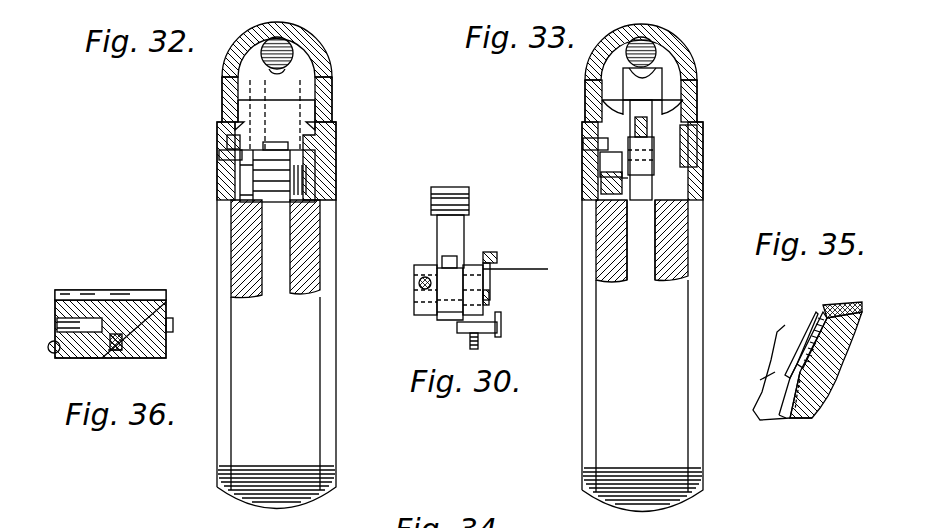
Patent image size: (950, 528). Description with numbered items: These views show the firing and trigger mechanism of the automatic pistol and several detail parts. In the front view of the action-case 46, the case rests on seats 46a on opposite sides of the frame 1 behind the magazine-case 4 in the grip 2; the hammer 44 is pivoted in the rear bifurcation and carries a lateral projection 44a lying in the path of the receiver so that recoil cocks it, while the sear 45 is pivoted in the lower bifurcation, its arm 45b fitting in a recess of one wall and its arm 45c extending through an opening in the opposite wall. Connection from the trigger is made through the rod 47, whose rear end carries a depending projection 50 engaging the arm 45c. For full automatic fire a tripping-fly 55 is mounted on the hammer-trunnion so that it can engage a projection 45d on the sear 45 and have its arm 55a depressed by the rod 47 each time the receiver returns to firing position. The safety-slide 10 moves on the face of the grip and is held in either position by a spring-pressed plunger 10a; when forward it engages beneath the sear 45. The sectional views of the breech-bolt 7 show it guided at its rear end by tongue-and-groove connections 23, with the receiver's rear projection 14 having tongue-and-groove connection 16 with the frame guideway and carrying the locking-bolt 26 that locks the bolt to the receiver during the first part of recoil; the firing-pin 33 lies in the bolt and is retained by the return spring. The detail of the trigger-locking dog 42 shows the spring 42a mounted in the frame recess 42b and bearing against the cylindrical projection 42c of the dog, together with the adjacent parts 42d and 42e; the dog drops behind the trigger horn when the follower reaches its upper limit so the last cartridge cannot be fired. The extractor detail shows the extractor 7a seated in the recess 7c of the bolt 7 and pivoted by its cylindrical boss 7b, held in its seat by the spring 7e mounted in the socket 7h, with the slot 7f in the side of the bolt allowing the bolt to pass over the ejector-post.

In FIG. 35, the frame 1 is at (840, 372).
In FIG. 32, the grip 2 is at (276, 293).
In FIG. 33, the grip 2 is at (642, 296).
In FIG. 35, the magazine-case 4 is at (775, 374).
In FIG. 32, the breech-bolt 7 is at (302, 48).
In FIG. 33, the breech-bolt 7 is at (690, 62).
In FIG. 36, the breech-bolt 7 is at (140, 300).
In FIG. 36, the extractor 7a is at (86, 358).
In FIG. 36, the cylindrical boss 7b is at (120, 356).
In FIG. 36, the recess 7c is at (54, 353).
In FIG. 36, the spring 7e is at (132, 338).
In FIG. 36, the pathway or slot 7f is at (78, 296).
In FIG. 36, the socket 7h is at (123, 341).
In FIG. 30, the safety-slide 10 is at (498, 330).
In FIG. 30, the spring-pressed plunger 10a is at (479, 342).
In FIG. 32, the rear projection 14 is at (228, 106).
In FIG. 33, the rear projection 14 is at (697, 103).
In FIG. 32, the tongue-and-groove connection 16 is at (310, 125).
In FIG. 33, the tongue-and-groove connection 16 is at (601, 117).
In FIG. 32, the tongue-and-groove connection 23 is at (222, 90).
In FIG. 33, the tongue-and-groove connection 23 is at (641, 95).
In FIG. 32, the locking-bolt 26 is at (305, 87).
In FIG. 32, the firing-pin 33 is at (288, 69).
In FIG. 33, the firing-pin 33 is at (641, 52).
In FIG. 36, the firing-pin 33 is at (90, 323).
In FIG. 35, the trigger-locking dog 42 is at (800, 345).
In FIG. 35, the spring 42a is at (832, 305).
In FIG. 35, the recess 42b is at (786, 420).
In FIG. 35, the cylindrical projection 42c is at (810, 400).
In FIG. 35, the guide strip 42d is at (812, 323).
In FIG. 35, the spring 42e is at (820, 310).
In FIG. 33, the hammer 44 is at (652, 137).
In FIG. 30, the hammer 44 is at (458, 233).
In FIG. 30, the lateral projection 44a is at (432, 259).
In FIG. 33, the sear 45 is at (647, 205).
In FIG. 30, the sear 45 is at (448, 321).
In FIG. 30, the arm 45b is at (428, 300).
In FIG. 30, the arm 45c is at (489, 297).
In FIG. 30, the projection 45d is at (501, 320).
In FIG. 32, the action-case 46 is at (330, 153).
In FIG. 33, the action-case 46 is at (700, 174).
In FIG. 30, the seat 46a is at (420, 284).
In FIG. 32, the rod 47 is at (228, 141).
In FIG. 33, the rod 47 is at (584, 138).
In FIG. 30, the rod 47 is at (498, 257).
In FIG. 32, the depending projection 50 is at (236, 161).
In FIG. 33, the depending projection 50 is at (599, 161).
In FIG. 30, the depending projection 50 is at (485, 278).
In FIG. 33, the tripping-fly 55 is at (603, 186).
In FIG. 30, the tripping-fly 55 is at (466, 262).
In FIG. 33, the arm 55a is at (600, 177).
In FIG. 30, the arm 55a is at (554, 271).